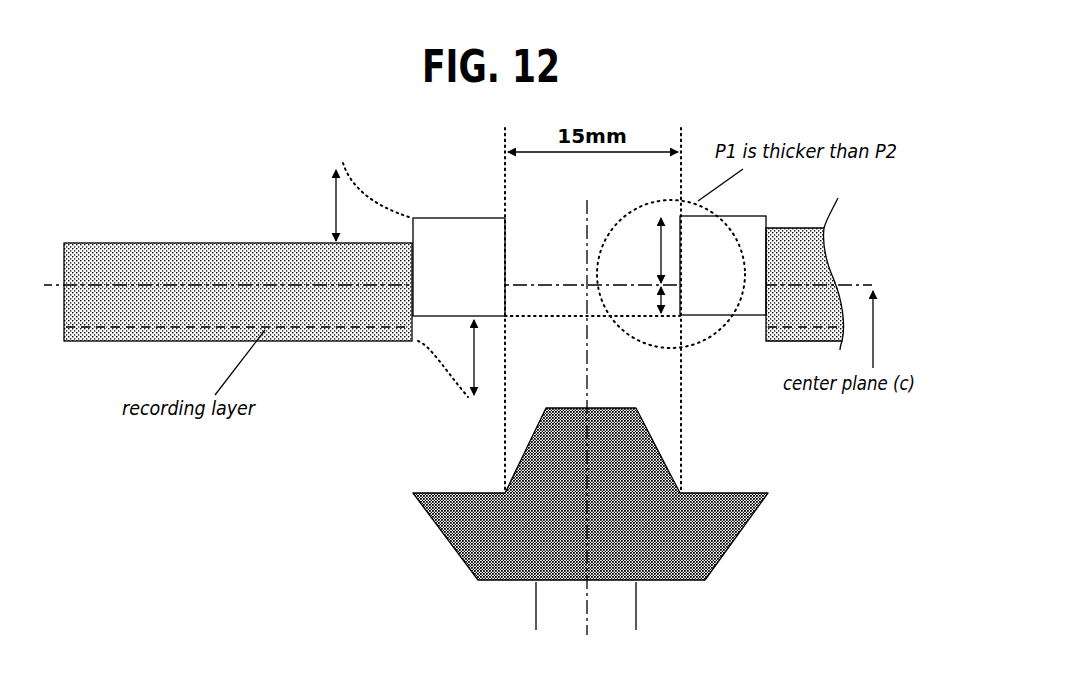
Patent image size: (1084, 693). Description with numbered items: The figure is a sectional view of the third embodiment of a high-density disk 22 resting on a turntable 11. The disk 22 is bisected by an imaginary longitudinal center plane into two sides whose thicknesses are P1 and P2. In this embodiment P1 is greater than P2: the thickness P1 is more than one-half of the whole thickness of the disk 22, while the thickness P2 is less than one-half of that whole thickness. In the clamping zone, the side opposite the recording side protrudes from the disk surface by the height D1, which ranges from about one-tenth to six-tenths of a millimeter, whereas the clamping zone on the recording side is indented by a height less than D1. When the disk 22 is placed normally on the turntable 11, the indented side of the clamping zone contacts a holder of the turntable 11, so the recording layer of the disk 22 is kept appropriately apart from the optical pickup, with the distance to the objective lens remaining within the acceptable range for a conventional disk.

The high-density disk 22 is at (177, 243).
The turntable 11 is at (645, 478).
The thickness of one side of the disk P1 is at (638, 250).
The thickness of the other side of the disk P2 is at (638, 301).
The height of protrusion D1 is at (401, 280).